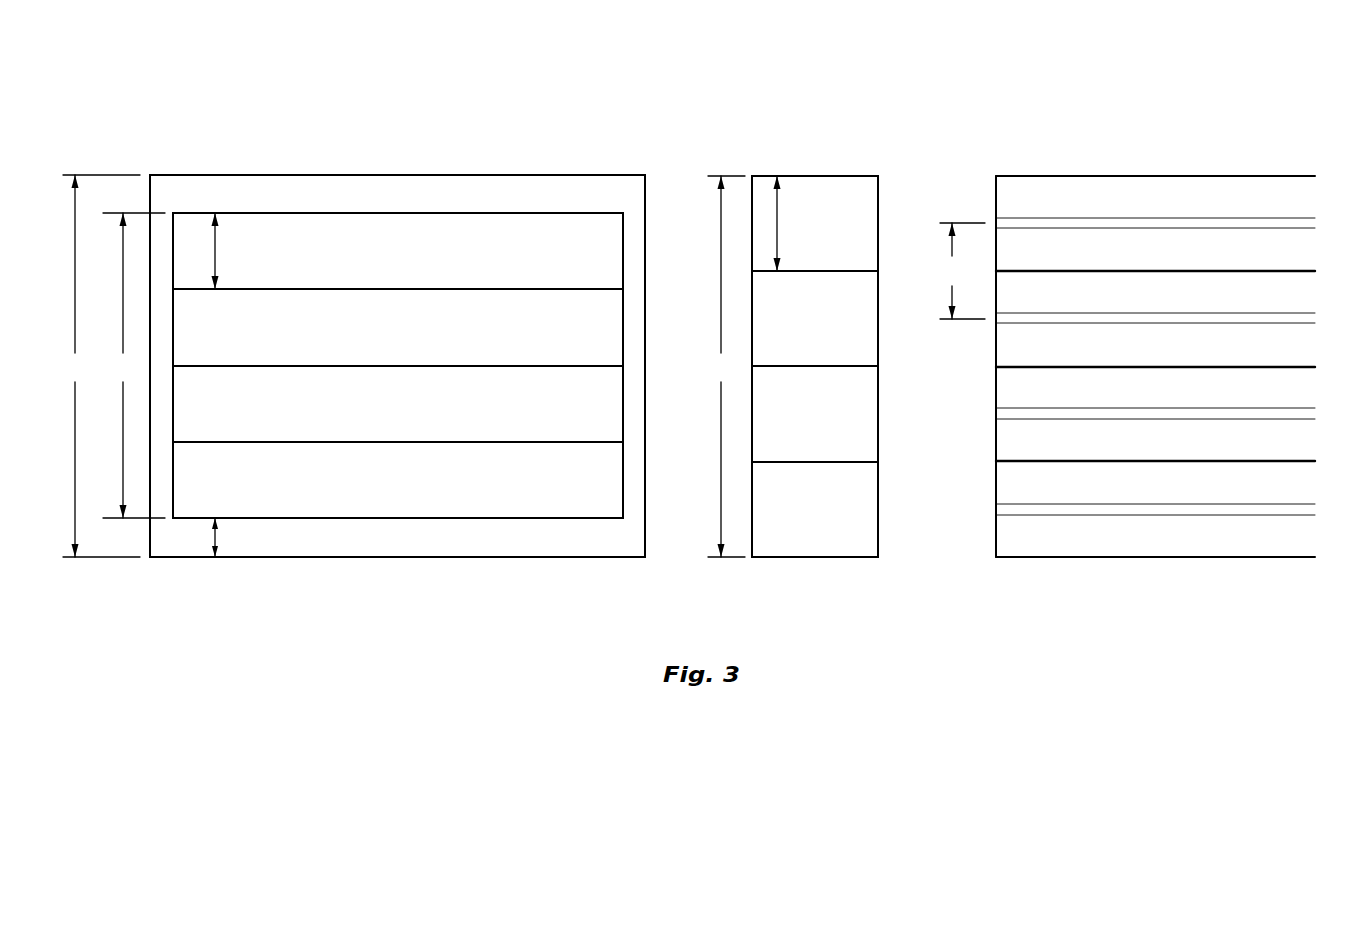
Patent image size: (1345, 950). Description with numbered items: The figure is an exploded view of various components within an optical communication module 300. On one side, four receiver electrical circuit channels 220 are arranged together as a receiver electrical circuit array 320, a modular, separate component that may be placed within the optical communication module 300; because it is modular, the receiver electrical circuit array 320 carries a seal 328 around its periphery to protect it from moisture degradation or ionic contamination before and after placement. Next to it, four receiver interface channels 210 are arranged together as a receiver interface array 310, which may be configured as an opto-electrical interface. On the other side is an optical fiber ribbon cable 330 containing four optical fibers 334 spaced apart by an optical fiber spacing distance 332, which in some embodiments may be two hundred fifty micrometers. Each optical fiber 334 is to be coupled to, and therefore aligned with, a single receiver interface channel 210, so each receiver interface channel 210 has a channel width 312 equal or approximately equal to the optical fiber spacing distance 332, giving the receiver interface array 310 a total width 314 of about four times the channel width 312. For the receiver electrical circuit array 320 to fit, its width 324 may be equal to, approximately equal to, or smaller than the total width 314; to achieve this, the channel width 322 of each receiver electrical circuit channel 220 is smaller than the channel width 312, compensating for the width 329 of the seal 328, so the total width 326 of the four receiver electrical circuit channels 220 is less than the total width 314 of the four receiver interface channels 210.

The optical communication module 300 is at (701, 58).
The receiver interface array 310 is at (792, 367).
The channel width 312 is at (778, 210).
The total width 314 is at (726, 366).
The receiver electrical circuit array 320 is at (353, 367).
The channel width 322 is at (216, 250).
The width 324 is at (100, 366).
The total width 326 is at (134, 365).
The seal 328 is at (348, 542).
The width 329 is at (217, 537).
The optical fiber ribbon cable 330 is at (1126, 366).
The optical fiber spacing distance 332 is at (961, 271).
The optical fiber 334 is at (1028, 218).
The receiver interface channel 210 is at (832, 236).
The receiver electrical circuit channel 220 is at (415, 264).